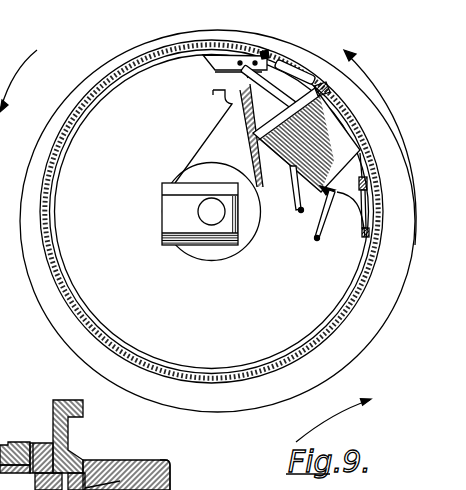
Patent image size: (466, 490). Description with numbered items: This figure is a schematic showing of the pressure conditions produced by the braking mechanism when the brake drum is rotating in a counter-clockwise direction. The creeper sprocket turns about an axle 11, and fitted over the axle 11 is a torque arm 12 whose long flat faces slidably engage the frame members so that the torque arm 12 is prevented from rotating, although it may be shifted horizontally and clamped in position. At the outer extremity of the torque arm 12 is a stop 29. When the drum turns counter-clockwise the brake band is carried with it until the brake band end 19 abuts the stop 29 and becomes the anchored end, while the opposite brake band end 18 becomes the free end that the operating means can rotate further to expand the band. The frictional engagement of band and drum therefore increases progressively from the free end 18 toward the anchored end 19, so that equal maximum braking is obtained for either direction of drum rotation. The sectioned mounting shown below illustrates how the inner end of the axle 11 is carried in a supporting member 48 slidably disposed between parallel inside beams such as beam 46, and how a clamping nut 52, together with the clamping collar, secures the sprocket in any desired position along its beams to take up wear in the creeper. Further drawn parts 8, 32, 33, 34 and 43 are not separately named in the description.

The brake shoe block 8 is at (306, 141).
The axle 11 is at (214, 216).
The torque arm 12 is at (208, 137).
The brake band end 18 is at (265, 50).
The brake band end 19 is at (325, 90).
The stop 29 is at (300, 72).
The link 32 is at (316, 238).
The plate 33 is at (232, 78).
The brake lining ring 34 is at (349, 124).
The link rod 43 is at (299, 209).
The inside beam 46 is at (69, 436).
The supporting member 48 is at (113, 466).
The clamping nut 52 is at (170, 476).